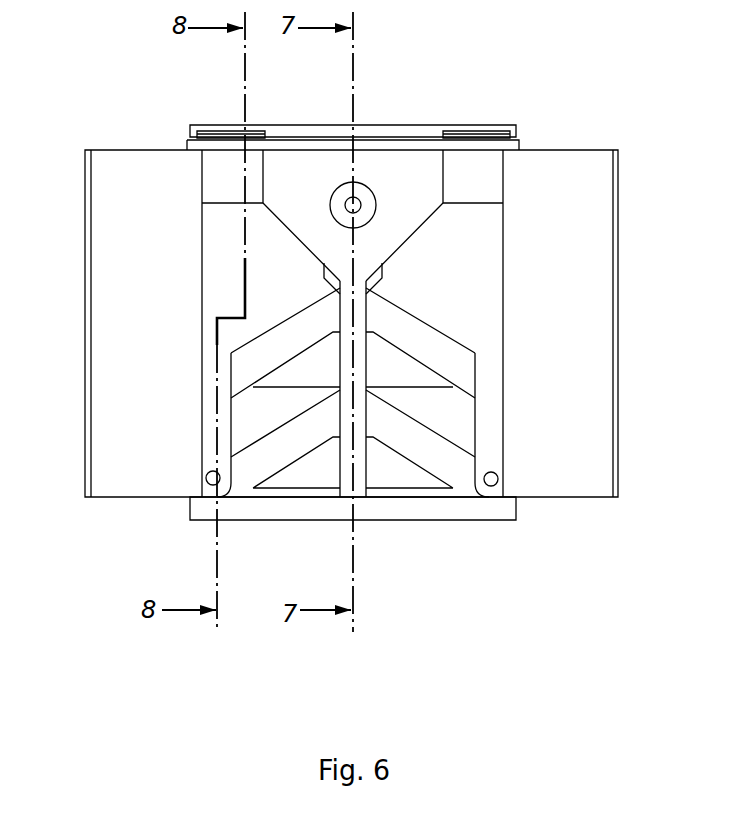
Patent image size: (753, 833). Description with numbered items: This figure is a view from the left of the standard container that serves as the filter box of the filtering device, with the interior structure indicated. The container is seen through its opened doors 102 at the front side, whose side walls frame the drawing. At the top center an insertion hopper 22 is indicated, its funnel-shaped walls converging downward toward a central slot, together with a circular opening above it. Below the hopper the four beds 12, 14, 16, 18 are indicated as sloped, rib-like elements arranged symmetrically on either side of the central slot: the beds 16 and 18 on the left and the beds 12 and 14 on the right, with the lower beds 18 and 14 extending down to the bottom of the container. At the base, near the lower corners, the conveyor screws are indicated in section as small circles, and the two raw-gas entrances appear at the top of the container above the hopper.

The doors 102 is at (111, 483).
The insertion hopper 22 is at (420, 232).
The bed 16 is at (242, 365).
The bed 12 is at (463, 365).
The bed 18 is at (242, 468).
The bed 14 is at (460, 467).